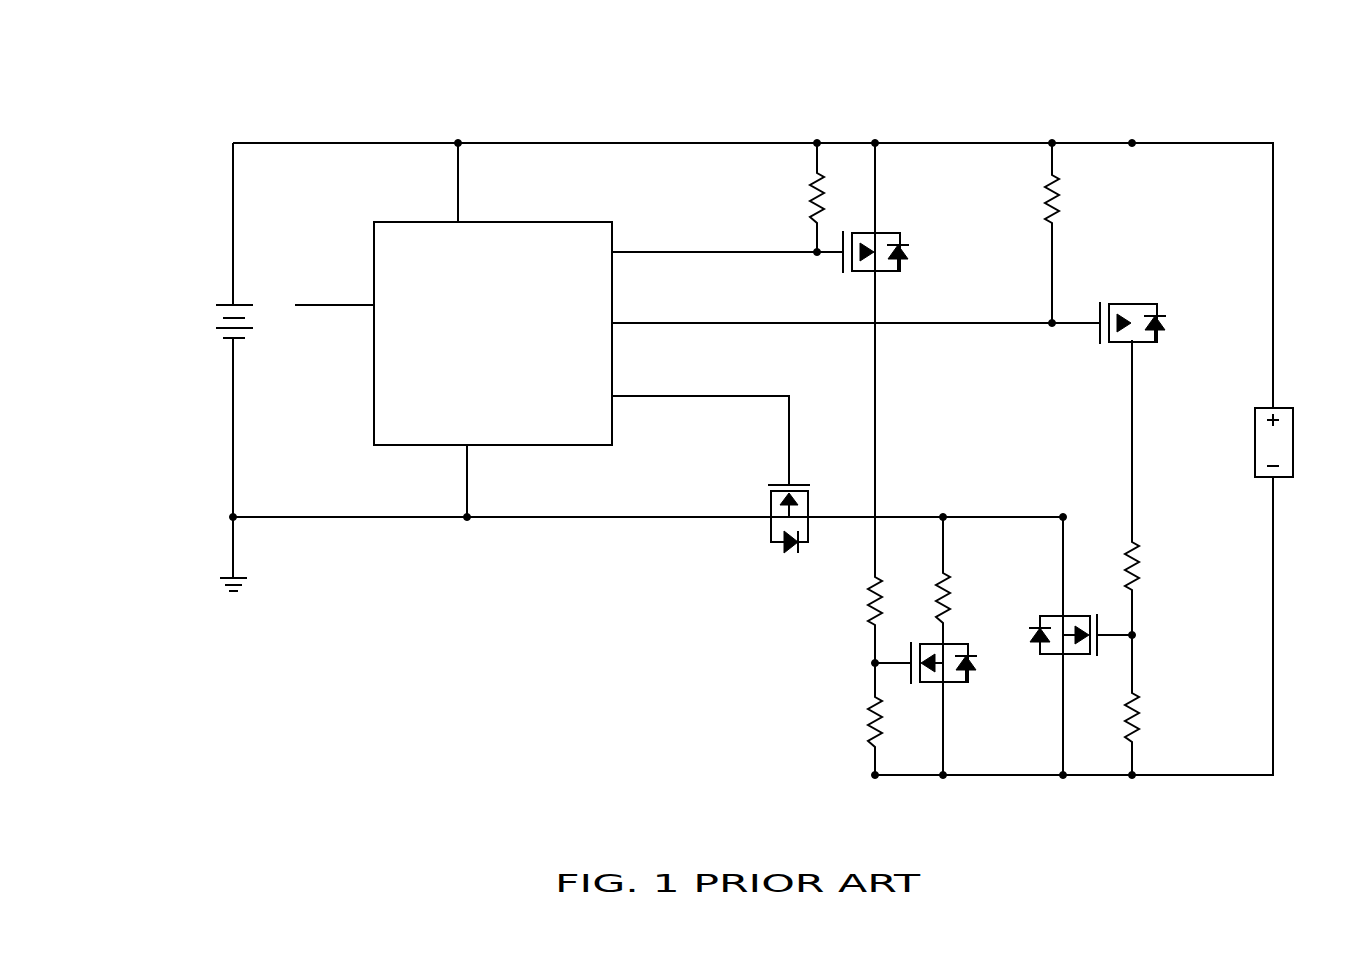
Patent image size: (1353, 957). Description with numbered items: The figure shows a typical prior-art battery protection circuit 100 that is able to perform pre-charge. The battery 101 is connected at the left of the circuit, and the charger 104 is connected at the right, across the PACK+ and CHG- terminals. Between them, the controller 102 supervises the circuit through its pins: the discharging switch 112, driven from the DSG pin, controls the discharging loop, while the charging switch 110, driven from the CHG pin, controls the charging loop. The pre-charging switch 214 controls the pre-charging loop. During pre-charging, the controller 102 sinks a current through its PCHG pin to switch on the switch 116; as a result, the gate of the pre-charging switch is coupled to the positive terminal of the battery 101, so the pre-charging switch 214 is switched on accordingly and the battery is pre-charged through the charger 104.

The battery protection circuit 100 is at (202, 120).
The battery 101 is at (238, 305).
The controller 102 is at (537, 222).
The charger 104 is at (1278, 408).
The charging switch 110 is at (1072, 617).
The discharging switch 112 is at (797, 485).
The switch 116 is at (880, 231).
The pre-charging switch 214 is at (948, 643).